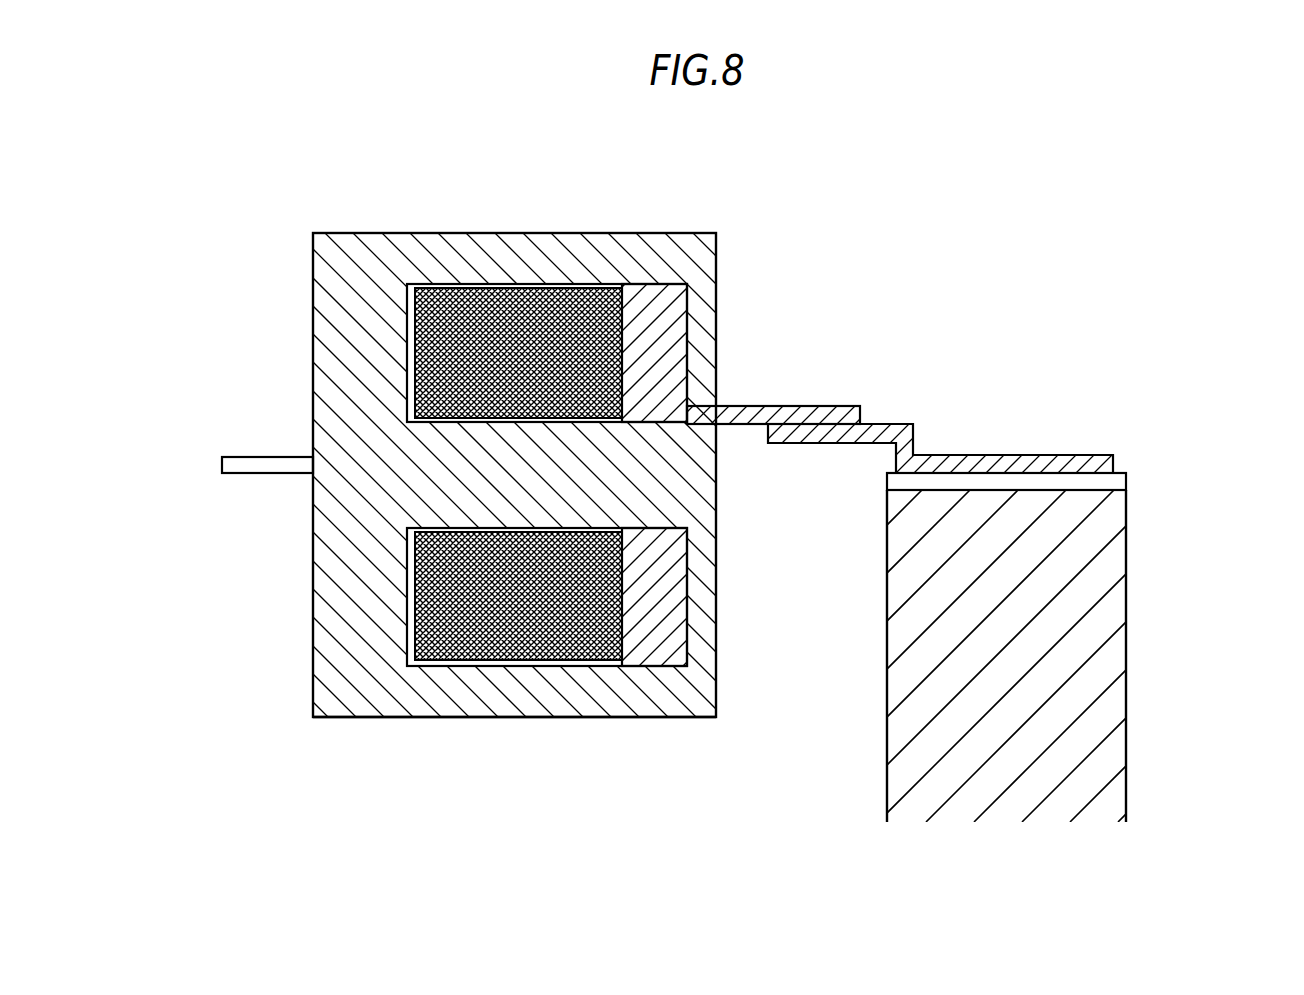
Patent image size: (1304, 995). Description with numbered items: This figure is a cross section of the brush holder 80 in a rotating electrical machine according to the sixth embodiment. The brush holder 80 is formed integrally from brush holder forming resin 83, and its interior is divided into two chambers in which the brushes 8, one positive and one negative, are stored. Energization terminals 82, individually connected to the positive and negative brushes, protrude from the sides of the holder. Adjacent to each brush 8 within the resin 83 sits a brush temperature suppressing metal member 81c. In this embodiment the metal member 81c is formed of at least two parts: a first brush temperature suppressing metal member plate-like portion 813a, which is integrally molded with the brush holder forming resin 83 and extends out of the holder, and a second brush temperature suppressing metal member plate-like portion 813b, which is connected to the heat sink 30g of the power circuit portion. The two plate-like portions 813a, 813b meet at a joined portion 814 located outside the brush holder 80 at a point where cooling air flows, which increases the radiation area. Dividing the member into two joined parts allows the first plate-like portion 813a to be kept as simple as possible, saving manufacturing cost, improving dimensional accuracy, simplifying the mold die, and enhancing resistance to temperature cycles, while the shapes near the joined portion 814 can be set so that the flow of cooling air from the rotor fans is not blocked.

The brush holder 80 is at (286, 245).
The brushes 8 is at (462, 393).
The brush temperature suppressing metal member 81c is at (648, 302).
The energization terminals 82 is at (252, 457).
The brush holder forming resin 83 is at (368, 707).
The first brush temperature suppressing metal member plate-like portion 813a is at (758, 418).
The second brush temperature suppressing metal member plate-like portion 813b is at (902, 433).
The joined portion 814 is at (862, 422).
The heat sink 30g is at (1127, 613).